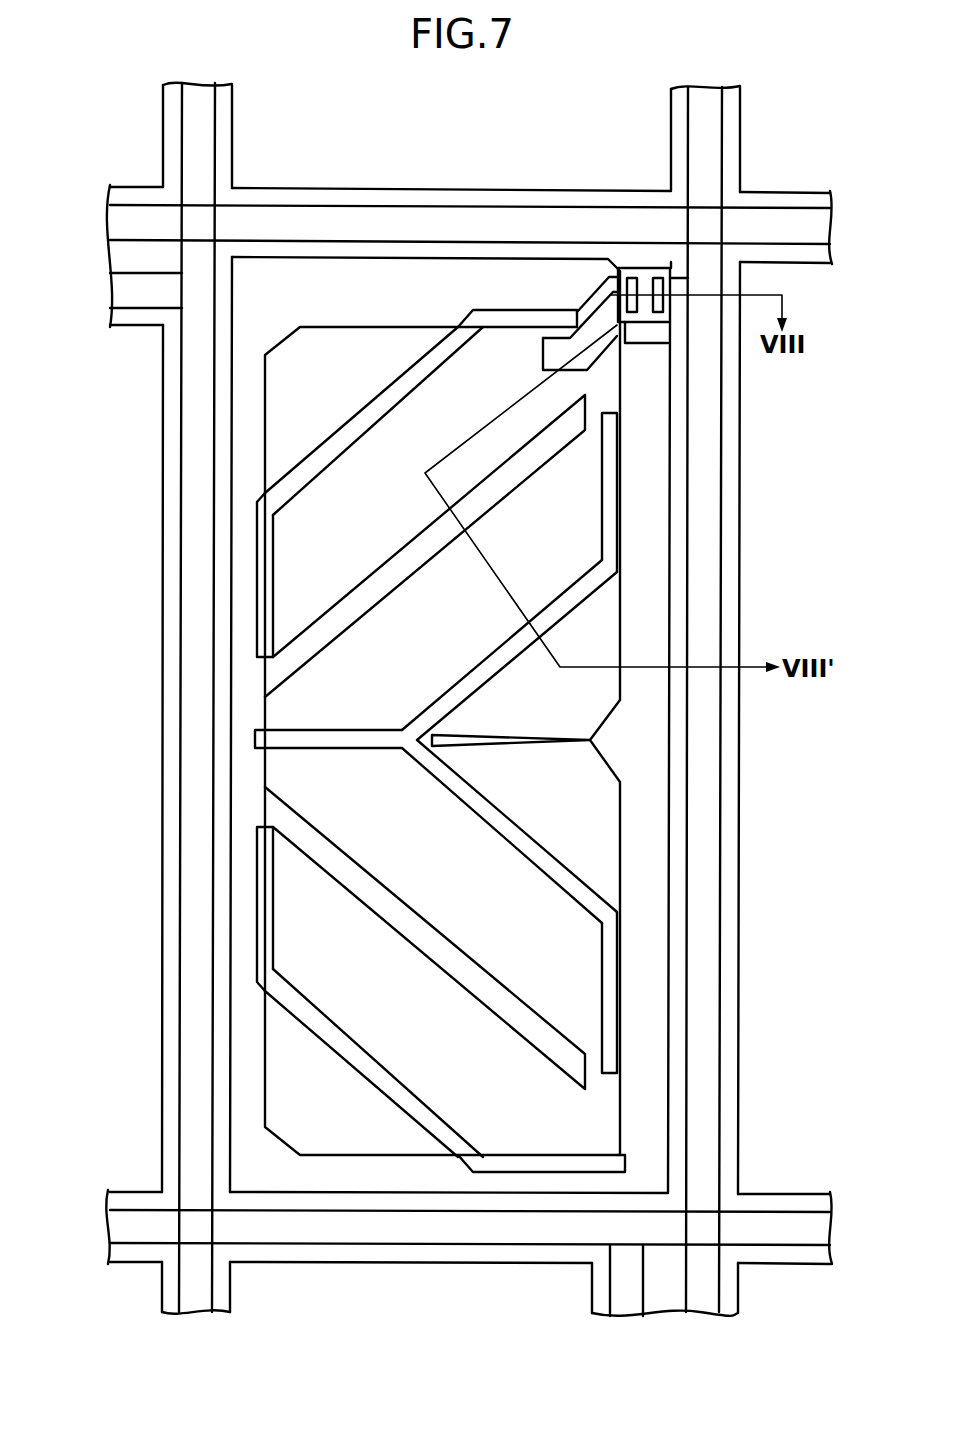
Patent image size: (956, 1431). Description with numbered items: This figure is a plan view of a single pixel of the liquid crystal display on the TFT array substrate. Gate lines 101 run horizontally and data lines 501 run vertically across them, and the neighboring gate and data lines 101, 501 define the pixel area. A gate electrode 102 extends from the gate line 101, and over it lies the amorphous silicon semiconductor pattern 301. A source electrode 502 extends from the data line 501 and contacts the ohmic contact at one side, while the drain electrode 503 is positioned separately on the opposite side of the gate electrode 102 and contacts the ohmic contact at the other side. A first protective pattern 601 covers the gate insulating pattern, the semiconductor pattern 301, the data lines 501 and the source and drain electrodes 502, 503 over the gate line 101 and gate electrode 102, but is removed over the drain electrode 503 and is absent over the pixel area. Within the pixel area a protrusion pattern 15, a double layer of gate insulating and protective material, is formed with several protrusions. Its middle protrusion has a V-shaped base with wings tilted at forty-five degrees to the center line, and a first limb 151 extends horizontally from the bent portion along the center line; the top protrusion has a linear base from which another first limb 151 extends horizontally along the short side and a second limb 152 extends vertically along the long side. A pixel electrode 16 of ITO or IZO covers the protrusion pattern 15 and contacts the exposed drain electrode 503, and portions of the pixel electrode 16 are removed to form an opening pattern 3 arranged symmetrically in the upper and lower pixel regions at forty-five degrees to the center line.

The gate line 101 is at (400, 190).
The data line 501 is at (722, 525).
The first protective pattern 601 is at (739, 483).
The pixel electrode 16 is at (620, 847).
The protrusion pattern 15 is at (355, 412).
The second limb 152 is at (614, 483).
The first limb 151 is at (512, 311).
The opening pattern 3 is at (383, 593).
The semiconductor pattern 301 is at (665, 300).
The drain electrode 503 is at (634, 272).
The source electrode 502 is at (660, 272).
The gate electrode 102 is at (652, 325).